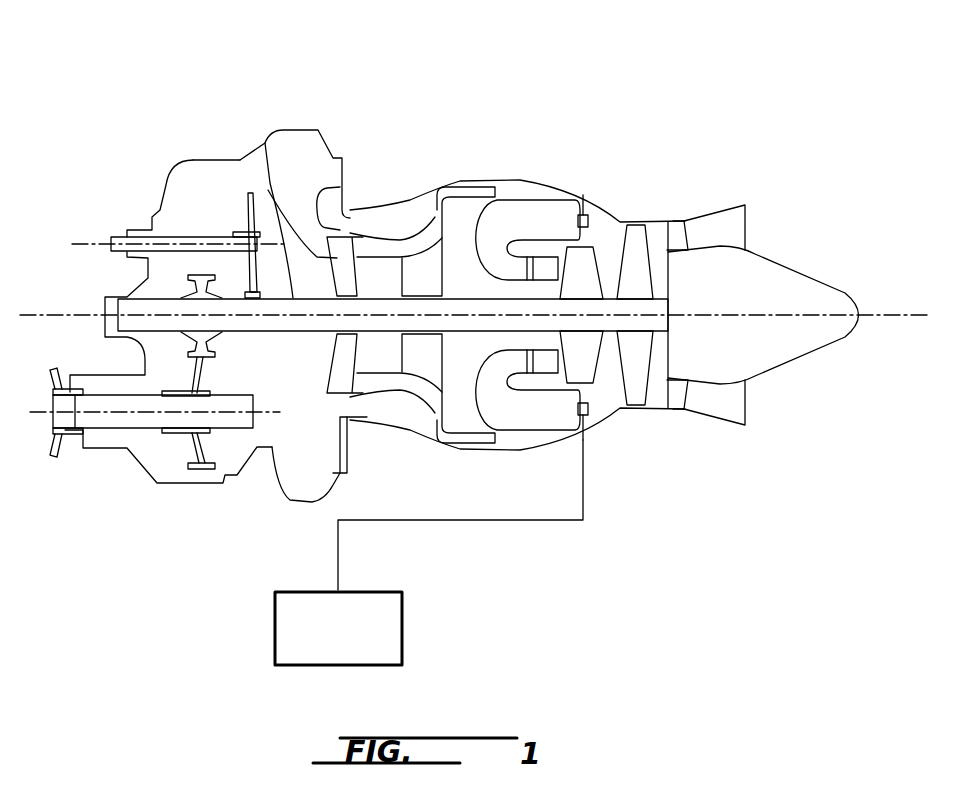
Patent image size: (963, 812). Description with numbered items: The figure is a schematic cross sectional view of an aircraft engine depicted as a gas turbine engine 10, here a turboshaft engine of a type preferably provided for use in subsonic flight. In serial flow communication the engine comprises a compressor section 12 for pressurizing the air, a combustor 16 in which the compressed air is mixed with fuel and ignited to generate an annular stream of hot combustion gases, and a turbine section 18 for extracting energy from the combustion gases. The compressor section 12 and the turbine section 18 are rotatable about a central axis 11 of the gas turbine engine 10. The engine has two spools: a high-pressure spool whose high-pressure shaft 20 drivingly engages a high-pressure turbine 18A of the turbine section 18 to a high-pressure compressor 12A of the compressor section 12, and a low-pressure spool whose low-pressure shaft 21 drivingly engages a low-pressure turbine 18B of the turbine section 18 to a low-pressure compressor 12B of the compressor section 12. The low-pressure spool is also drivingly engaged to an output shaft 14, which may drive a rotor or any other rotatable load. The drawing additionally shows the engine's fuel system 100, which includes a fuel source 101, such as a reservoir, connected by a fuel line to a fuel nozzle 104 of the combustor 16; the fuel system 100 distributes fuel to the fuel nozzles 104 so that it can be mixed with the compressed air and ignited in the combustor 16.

The gas turbine engine 10 is at (760, 146).
The central axis 11 is at (900, 312).
The compressor section 12 is at (355, 384).
The high-pressure compressor 12A is at (425, 272).
The low-pressure compressor 12B is at (350, 190).
The output shaft 14 is at (103, 422).
The combustor 16 is at (542, 222).
The turbine section 18 is at (637, 217).
The high-pressure turbine 18A is at (584, 270).
The low-pressure turbine 18B is at (638, 375).
The high-pressure shaft 20 is at (377, 293).
The low-pressure shaft 21 is at (275, 187).
The fuel system 100 is at (540, 543).
The fuel source 101 is at (403, 628).
The fuel nozzles 104 is at (591, 413).